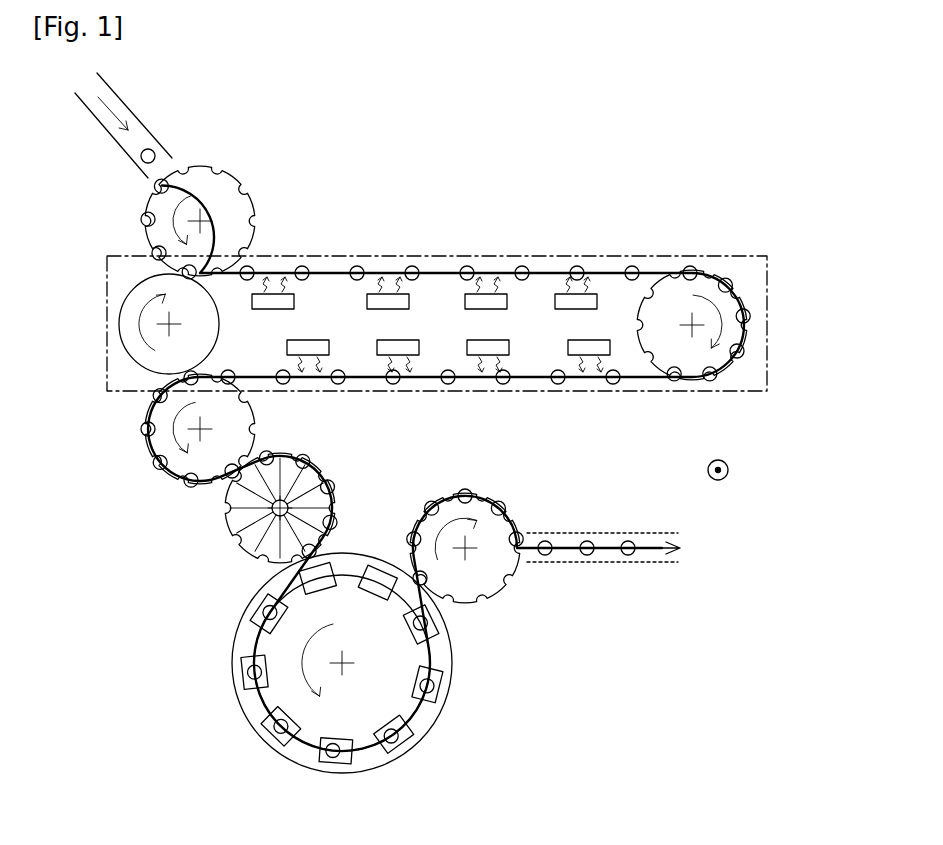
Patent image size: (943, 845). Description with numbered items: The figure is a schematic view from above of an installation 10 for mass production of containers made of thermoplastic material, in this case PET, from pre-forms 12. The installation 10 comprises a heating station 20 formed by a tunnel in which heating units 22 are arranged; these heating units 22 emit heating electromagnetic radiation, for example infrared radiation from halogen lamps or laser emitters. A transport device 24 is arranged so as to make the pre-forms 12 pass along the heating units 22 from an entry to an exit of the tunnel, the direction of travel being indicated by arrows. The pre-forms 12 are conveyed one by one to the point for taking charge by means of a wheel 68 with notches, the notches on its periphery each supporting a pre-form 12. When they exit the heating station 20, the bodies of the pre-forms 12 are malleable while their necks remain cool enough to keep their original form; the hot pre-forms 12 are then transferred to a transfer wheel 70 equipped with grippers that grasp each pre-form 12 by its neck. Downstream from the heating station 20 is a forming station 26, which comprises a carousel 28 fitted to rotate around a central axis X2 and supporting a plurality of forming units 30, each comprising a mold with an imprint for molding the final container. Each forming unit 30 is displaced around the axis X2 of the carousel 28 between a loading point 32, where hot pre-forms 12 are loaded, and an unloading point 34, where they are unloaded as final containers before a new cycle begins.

The installation 10 is at (702, 195).
The pre-form 12 is at (137, 217).
The heating station 20 is at (777, 378).
The heating unit 22 is at (472, 301).
The transport device 24 is at (493, 268).
The forming station 26 is at (226, 711).
The carousel 28 is at (422, 718).
The forming unit 30 is at (283, 740).
The loading point 32 is at (268, 546).
The unloading point 34 is at (445, 585).
The wheel with notches 68 is at (205, 182).
The transfer wheel 70 is at (158, 443).
The central axis X2 is at (343, 665).